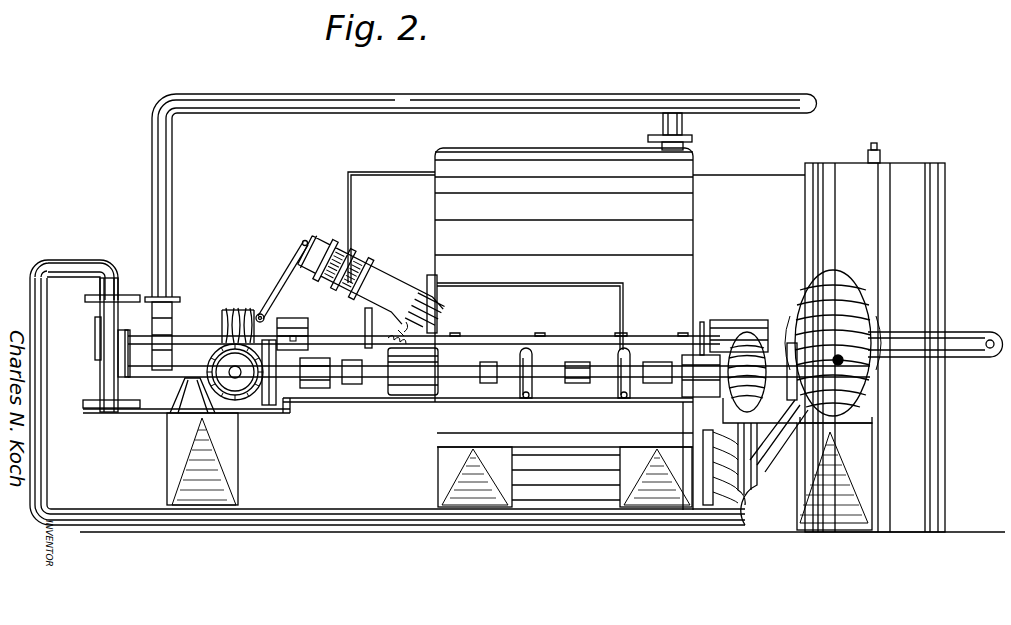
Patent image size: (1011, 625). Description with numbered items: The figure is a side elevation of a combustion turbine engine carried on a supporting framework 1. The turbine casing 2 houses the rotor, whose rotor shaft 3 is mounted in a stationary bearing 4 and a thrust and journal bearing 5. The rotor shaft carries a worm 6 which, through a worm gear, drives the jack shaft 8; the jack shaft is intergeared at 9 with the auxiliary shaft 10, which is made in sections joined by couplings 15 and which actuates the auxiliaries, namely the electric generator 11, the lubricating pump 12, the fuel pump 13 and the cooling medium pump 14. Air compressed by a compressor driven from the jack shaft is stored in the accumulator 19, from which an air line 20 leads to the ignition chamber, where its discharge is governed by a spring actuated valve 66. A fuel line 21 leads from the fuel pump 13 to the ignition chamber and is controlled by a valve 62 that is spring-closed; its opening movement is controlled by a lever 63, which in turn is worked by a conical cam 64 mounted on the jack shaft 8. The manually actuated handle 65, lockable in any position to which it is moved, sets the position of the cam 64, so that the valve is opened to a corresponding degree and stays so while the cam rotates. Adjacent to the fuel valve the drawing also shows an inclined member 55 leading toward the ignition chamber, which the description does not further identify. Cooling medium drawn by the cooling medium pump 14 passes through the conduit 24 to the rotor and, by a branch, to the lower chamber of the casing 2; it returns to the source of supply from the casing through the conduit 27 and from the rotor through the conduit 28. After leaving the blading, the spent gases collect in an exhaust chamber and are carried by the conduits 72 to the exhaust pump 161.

The supporting framework 1 is at (173, 442).
The turbine casing 2 is at (607, 150).
The rotor shaft 3 is at (948, 338).
The stationary bearing 4 is at (300, 318).
The thrust and journal bearing 5 is at (718, 320).
The worm 6 is at (222, 313).
The jack shaft 8 is at (235, 378).
The intergearing 9 is at (250, 398).
The auxiliary shaft 10 is at (455, 364).
The electric generator 11 is at (369, 359).
The lubricating pump 12 is at (535, 392).
The fuel pump 13 is at (618, 392).
The cooling medium pump 14 is at (740, 343).
The couplings 15 is at (577, 384).
The accumulator 19 is at (875, 337).
The air line 20 is at (388, 172).
The fuel line 21 is at (562, 284).
The conduit 24 is at (320, 509).
The conduit 27 is at (682, 122).
The conduit 28 is at (537, 100).
The inclined pipe 55 is at (372, 276).
The valve 62 is at (328, 292).
The lever 63 is at (278, 293).
The conical cam 64 is at (302, 243).
The manually actuated handle 65 is at (100, 372).
The spring actuated valve 66 is at (342, 256).
The conduits 72 is at (763, 470).
The exhaust pump 161 is at (802, 292).